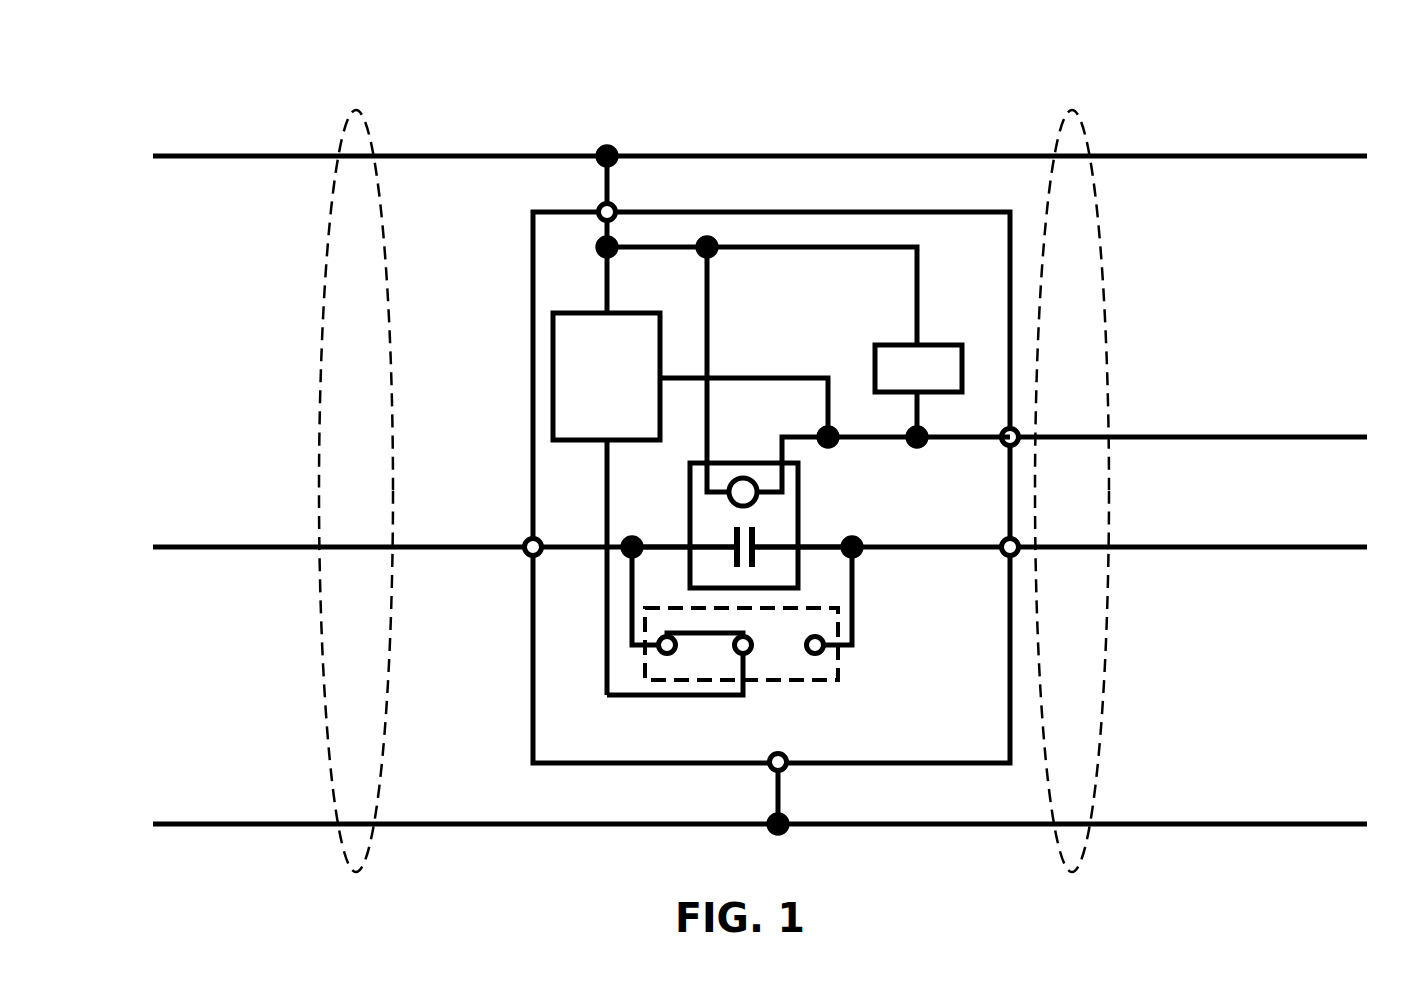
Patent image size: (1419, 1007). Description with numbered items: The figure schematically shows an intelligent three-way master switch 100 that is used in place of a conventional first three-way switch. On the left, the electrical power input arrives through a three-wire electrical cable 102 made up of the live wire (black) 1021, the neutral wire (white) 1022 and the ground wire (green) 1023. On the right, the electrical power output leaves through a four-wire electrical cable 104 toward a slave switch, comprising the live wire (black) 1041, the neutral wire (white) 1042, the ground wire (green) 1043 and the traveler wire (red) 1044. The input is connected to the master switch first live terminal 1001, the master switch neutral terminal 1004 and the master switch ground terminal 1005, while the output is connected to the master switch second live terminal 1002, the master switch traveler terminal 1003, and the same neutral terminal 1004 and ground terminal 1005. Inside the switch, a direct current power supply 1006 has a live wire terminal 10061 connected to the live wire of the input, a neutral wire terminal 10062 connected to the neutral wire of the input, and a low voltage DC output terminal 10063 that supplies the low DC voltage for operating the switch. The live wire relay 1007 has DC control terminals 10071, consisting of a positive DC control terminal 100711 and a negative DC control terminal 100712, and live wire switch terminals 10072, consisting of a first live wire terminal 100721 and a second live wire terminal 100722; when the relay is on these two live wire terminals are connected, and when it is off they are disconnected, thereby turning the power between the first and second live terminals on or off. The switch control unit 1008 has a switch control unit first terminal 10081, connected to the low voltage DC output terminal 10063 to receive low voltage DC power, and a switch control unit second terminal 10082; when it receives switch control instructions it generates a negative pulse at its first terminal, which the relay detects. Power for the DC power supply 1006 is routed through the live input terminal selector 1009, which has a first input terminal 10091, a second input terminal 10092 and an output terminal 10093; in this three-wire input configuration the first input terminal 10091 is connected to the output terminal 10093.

The intelligent three-way master switch 100 is at (145, 79).
The three-wire electrical cable 102 is at (314, 262).
The four-wire electrical cable 104 is at (1105, 242).
The master switch first live terminal 1001 is at (525, 553).
The master switch second live terminal 1002 is at (1010, 556).
The master switch traveler terminal 1003 is at (1020, 435).
The master switch neutral terminal 1004 is at (598, 208).
The master switch ground terminal 1005 is at (768, 760).
The direct current (DC) power supply 1006 is at (552, 360).
The live wire terminal 10061 is at (603, 490).
The neutral wire terminal 10062 is at (603, 285).
The low voltage DC output terminal 10063 is at (728, 376).
The live wire relay 1007 is at (799, 512).
The DC control terminals 10071 is at (757, 478).
The positive DC control terminal 100711 is at (792, 453).
The negative DC control terminal 100712 is at (710, 447).
The live wire switch terminals 10072 is at (755, 567).
The first live wire terminal 100721 is at (650, 543).
The second live wire terminal 100722 is at (830, 544).
The switch control unit 1008 is at (874, 372).
The switch control unit first terminal 10081 is at (915, 418).
The switch control unit second terminal 10082 is at (915, 310).
The live input terminal selector 1009 is at (838, 679).
The first input terminal 10091 is at (665, 656).
The second input terminal 10092 is at (815, 656).
The output terminal 10093 is at (744, 656).
The live wire (black) 1021 is at (258, 548).
The neutral wire (white) 1022 is at (270, 157).
The ground wire (green) 1023 is at (258, 824).
The live wire (black) 1041 is at (1230, 547).
The neutral wire (white) 1042 is at (1230, 157).
The ground wire (green) 1043 is at (1230, 824).
The traveler wire (red) 1044 is at (1230, 437).